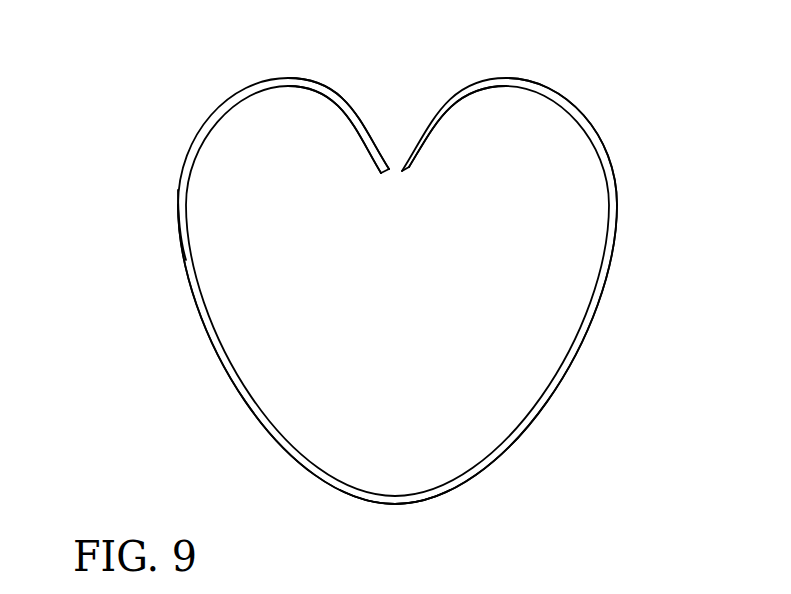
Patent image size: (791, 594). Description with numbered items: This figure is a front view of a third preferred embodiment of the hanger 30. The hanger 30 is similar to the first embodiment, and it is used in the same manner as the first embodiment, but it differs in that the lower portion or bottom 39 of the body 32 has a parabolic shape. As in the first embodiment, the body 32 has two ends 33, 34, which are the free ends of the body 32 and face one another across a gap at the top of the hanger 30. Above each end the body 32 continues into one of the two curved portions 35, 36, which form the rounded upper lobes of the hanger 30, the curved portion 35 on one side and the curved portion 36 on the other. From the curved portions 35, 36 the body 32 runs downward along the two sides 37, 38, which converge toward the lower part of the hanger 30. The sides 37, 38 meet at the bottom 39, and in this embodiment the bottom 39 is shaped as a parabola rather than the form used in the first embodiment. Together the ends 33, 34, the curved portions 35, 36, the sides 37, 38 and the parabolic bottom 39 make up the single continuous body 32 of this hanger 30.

The hanger 30 is at (188, 112).
The body 32 is at (178, 213).
The end 33 is at (366, 146).
The end 34 is at (426, 144).
The curved portion 35 is at (266, 79).
The curved portion 36 is at (571, 101).
The side 37 is at (204, 326).
The side 38 is at (579, 350).
The bottom 39 is at (412, 504).